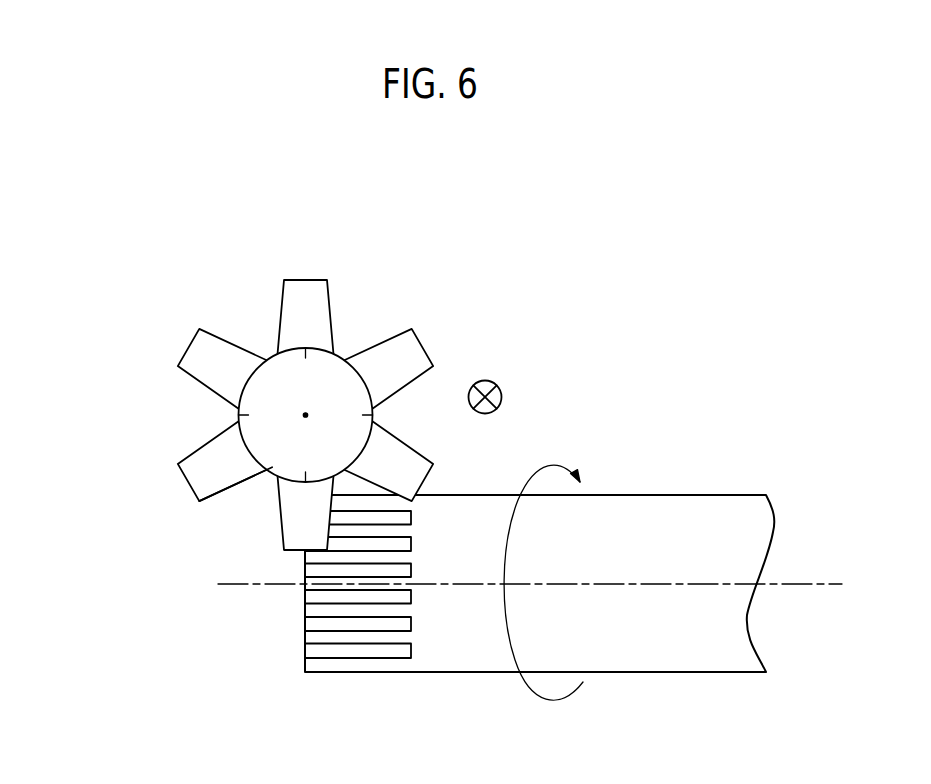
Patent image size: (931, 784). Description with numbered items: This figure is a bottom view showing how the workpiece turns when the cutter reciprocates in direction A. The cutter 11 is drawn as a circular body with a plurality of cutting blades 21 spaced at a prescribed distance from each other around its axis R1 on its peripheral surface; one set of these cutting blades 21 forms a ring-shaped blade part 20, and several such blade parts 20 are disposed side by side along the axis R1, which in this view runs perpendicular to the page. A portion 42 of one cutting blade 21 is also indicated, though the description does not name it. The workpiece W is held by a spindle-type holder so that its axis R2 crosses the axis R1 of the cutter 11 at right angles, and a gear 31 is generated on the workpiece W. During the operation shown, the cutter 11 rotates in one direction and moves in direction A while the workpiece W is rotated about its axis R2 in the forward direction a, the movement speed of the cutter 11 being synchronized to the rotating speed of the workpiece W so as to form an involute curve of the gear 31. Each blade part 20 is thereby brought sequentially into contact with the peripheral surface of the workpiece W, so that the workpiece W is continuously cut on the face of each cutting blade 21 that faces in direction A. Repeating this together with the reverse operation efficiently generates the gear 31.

The cutter 11 is at (150, 224).
The blade part 20 is at (229, 415).
The cutting blade 21 is at (203, 445).
The cutting edge 42 is at (207, 470).
The gear 31 is at (305, 650).
The axis of the cutter R1 is at (306, 415).
The axis of the workpiece R2 is at (547, 584).
The workpiece W is at (690, 495).
The direction A is at (495, 385).
The direction a is at (543, 564).